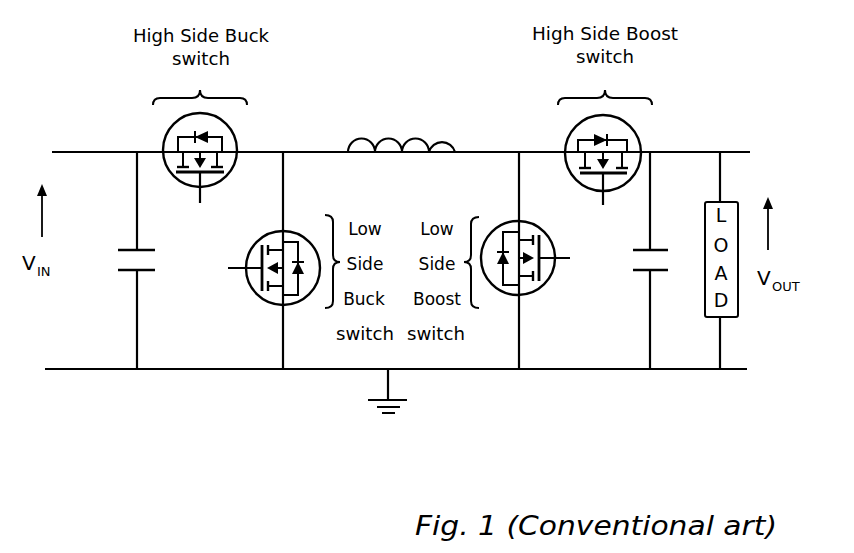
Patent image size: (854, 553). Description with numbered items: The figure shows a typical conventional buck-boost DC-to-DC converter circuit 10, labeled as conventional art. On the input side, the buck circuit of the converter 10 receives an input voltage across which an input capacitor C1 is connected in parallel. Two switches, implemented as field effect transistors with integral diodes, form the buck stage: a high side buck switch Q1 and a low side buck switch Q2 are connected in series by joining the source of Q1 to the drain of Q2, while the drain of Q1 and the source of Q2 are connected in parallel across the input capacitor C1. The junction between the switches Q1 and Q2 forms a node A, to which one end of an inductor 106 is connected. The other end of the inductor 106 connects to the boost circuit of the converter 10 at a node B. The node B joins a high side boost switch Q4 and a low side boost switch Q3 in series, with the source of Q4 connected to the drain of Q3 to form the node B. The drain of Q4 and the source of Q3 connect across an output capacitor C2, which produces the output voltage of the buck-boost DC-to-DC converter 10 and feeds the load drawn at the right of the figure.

The buck-boost DC-to-DC converter circuit 10 is at (338, 442).
The inductor 106 is at (405, 155).
The high side buck switch Q1 is at (200, 167).
The low side buck switch Q2 is at (265, 268).
The low side boost switch Q3 is at (533, 258).
The high side boost switch Q4 is at (603, 168).
The input capacitor C1 is at (150, 260).
The output capacitor C2 is at (631, 260).
The node A is at (286, 152).
The node B is at (519, 152).